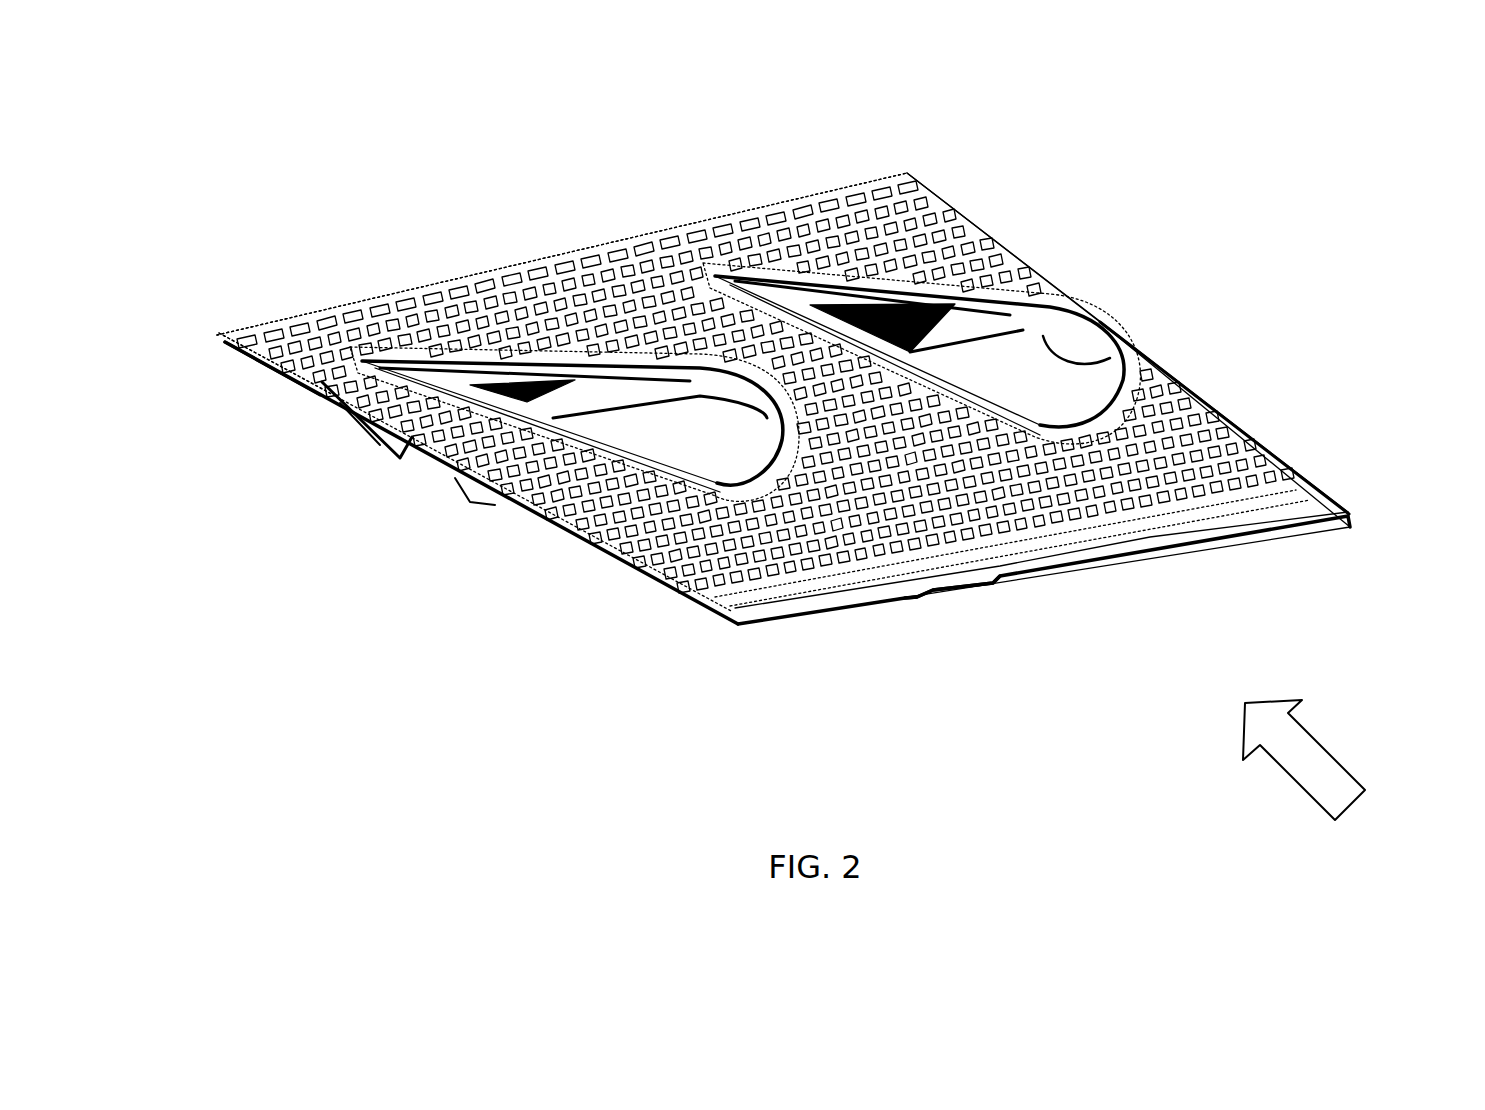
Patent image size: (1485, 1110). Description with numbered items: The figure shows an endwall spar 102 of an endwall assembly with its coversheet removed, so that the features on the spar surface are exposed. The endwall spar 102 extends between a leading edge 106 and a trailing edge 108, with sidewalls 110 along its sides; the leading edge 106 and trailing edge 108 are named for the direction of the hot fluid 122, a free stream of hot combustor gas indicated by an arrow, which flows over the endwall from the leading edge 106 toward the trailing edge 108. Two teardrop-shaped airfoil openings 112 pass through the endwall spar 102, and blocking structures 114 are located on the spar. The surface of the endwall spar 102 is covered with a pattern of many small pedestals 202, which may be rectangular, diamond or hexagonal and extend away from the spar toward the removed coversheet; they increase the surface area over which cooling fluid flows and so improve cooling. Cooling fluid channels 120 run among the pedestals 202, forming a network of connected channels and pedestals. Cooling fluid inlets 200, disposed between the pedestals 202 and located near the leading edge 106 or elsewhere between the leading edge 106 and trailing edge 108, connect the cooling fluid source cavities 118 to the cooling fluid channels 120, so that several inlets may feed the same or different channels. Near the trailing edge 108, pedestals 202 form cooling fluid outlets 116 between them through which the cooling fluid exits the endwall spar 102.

The endwall spar 102 is at (289, 213).
The leading edge 106 is at (1337, 545).
The trailing edge 108 is at (253, 325).
The sidewalls 110 is at (510, 493).
The airfoil opening 112 is at (662, 432).
The blocking structures 114 is at (380, 447).
The cooling fluid outlets 116 is at (707, 212).
The cooling fluid source cavities 118 is at (470, 502).
The cooling fluid channels 120 is at (925, 440).
The hot fluid 122 is at (1304, 760).
The cooling fluid inlets 200 is at (890, 247).
The pedestals 202 is at (400, 285).